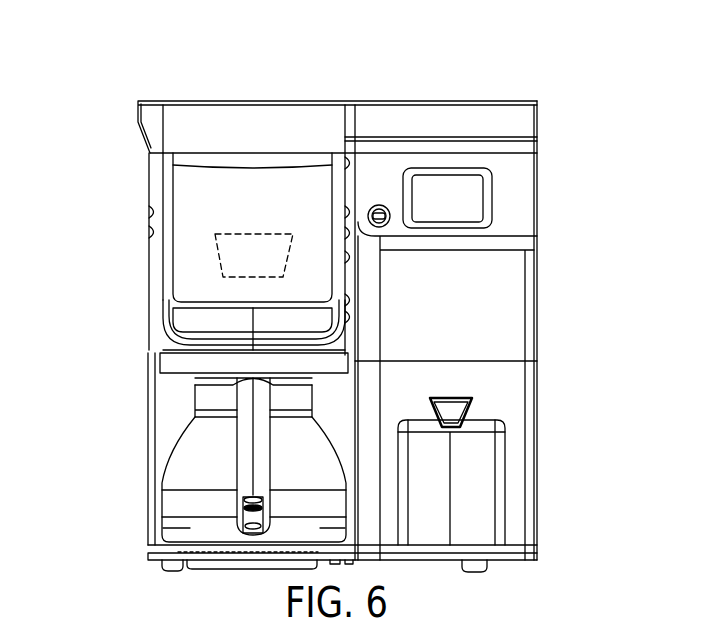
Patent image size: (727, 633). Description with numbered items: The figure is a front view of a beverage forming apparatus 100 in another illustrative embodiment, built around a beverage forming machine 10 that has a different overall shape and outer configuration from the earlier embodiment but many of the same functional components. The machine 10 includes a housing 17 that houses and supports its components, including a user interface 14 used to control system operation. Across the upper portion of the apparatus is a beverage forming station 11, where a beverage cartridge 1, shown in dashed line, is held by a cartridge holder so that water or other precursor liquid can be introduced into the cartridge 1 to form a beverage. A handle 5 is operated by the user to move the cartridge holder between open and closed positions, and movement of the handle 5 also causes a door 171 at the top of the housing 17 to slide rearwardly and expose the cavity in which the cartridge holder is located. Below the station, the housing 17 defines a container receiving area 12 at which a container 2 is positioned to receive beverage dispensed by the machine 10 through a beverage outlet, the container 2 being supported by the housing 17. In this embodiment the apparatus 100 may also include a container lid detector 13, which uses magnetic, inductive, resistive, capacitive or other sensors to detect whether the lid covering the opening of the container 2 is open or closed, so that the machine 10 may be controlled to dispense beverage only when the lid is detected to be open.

The beverage forming apparatus 100 is at (152, 63).
The beverage forming machine 10 is at (552, 201).
The beverage forming station 11 is at (129, 211).
The door 171 is at (236, 120).
The beverage cartridge 1 is at (249, 232).
The user interface 14 is at (454, 212).
The handle 5 is at (195, 325).
The container lid detector 13 is at (195, 363).
The container 2 is at (195, 452).
The container receiving area 12 is at (129, 546).
The housing 17 is at (538, 415).